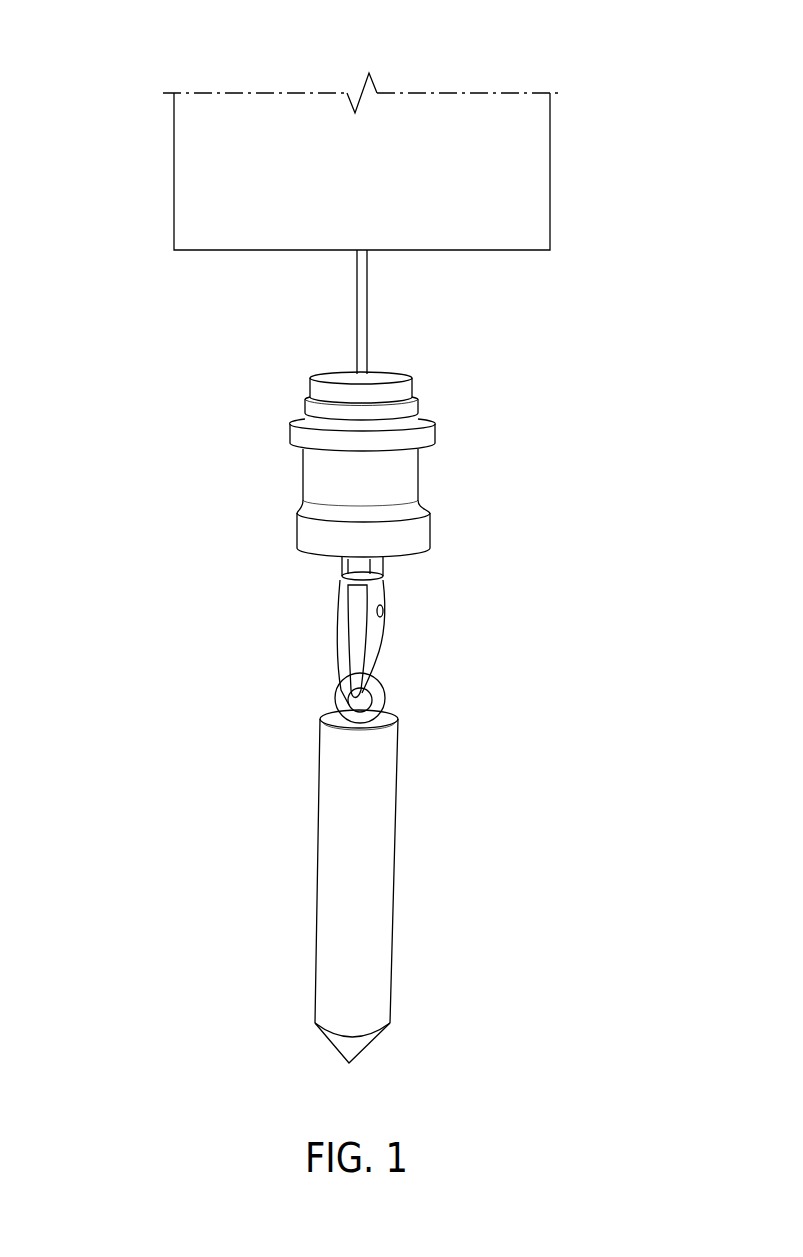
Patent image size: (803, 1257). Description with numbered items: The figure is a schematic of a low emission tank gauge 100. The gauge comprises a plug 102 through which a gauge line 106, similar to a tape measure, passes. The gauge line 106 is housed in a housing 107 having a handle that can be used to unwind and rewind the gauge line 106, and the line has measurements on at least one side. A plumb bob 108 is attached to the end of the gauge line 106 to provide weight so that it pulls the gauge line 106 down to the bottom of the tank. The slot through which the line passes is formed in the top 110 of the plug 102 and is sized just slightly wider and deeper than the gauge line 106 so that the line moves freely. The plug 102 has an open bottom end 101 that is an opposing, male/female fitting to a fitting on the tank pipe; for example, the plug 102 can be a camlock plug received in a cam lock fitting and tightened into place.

The low emission tank gauge 100 is at (157, 50).
The housing 107 is at (550, 170).
The gauge line 106 is at (367, 290).
The top 110 is at (342, 377).
The plug 102 is at (418, 473).
The open bottom end 101 is at (417, 537).
The plumb bob 108 is at (397, 847).